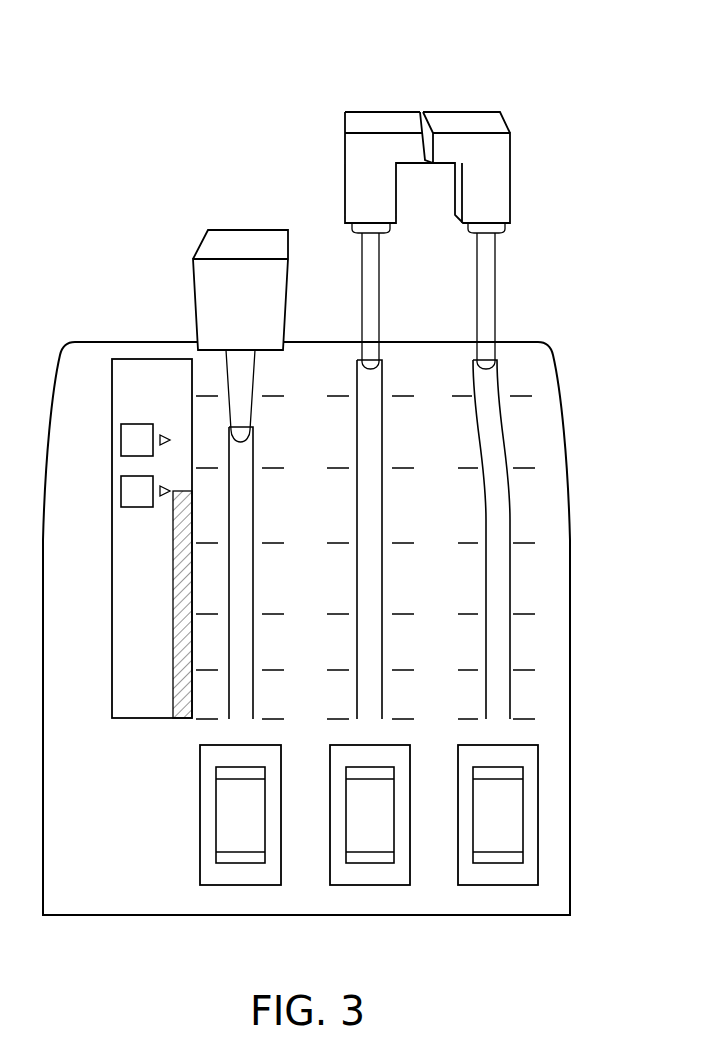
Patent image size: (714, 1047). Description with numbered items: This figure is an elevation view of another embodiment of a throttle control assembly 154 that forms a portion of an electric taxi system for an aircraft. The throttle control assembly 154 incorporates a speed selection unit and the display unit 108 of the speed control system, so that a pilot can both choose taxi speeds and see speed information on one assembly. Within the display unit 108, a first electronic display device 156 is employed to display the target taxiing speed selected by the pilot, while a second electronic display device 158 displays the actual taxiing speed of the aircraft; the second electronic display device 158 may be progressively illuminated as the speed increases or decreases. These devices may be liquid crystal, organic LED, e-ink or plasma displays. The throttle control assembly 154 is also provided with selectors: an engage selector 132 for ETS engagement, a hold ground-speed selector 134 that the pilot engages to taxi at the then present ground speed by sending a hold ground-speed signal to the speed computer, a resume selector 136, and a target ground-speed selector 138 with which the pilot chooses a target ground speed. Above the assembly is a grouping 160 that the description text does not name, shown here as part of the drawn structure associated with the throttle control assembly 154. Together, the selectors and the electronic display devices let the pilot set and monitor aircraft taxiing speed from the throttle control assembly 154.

The display unit 108 is at (119, 538).
The engage selector 132 is at (240, 863).
The hold ground-speed selector 134 is at (365, 863).
The resume selector 136 is at (497, 863).
The target ground-speed selector 138 is at (246, 240).
The throttle control assembly 154 is at (566, 526).
The first electronic display device 156 is at (121, 440).
The second electronic display device 158 is at (121, 490).
The sensor assembly 160 is at (524, 103).